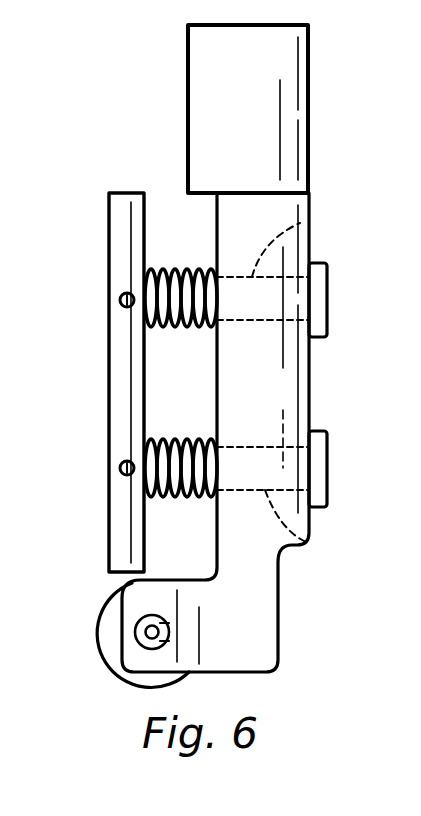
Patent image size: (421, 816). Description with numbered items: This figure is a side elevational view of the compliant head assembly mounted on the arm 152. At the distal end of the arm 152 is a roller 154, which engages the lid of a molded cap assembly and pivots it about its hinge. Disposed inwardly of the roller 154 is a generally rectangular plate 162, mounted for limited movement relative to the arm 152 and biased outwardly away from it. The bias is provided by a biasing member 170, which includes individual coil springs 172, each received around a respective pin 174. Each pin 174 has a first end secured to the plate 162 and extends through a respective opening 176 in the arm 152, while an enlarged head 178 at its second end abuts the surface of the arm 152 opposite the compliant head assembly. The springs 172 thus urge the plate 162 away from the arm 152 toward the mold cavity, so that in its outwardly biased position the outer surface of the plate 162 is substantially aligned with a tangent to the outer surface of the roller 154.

The arm 152 is at (268, 373).
The roller 154 is at (100, 646).
The plate 162 is at (109, 204).
The biasing member 170 is at (212, 356).
The spring 172 is at (188, 268).
The pin 174 is at (146, 290).
The opening 176 is at (300, 223).
The enlarged head 178 is at (328, 300).